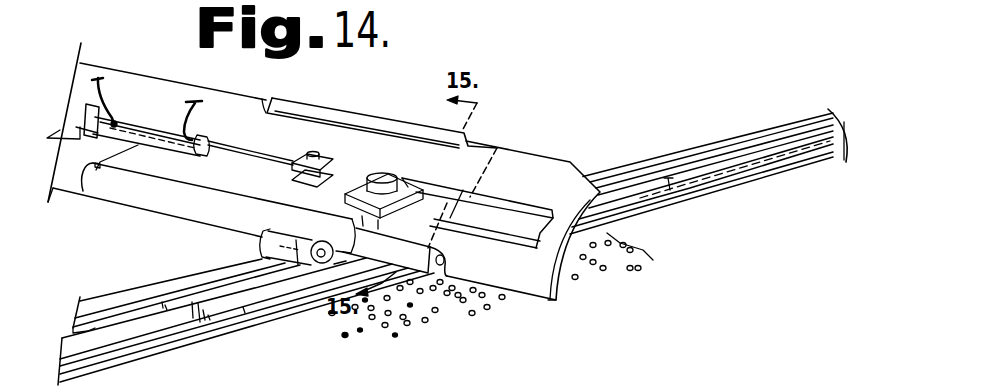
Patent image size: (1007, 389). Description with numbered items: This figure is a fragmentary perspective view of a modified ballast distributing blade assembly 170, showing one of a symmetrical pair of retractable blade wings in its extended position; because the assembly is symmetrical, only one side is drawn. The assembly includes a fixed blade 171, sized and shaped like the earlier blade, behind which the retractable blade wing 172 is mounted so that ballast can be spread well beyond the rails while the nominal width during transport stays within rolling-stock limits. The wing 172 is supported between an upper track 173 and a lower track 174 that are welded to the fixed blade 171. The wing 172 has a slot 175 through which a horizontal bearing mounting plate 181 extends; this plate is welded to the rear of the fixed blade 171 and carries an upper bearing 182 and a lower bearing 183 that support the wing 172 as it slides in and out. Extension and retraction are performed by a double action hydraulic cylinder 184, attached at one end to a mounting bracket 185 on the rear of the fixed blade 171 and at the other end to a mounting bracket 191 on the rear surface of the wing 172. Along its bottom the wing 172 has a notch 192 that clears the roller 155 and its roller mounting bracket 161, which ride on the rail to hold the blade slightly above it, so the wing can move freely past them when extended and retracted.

The ballast distributing blade assembly 170 is at (150, 66).
The mounting bracket 185 is at (80, 124).
The fixed blade 171 is at (157, 109).
The mounting bracket 191 is at (310, 153).
The upper track 173 is at (395, 127).
The horizontal bearing mounting plate 181 is at (345, 190).
The upper bearing 182 is at (450, 160).
The retractable blade wing 172 is at (550, 190).
The double action hydraulic cylinder 184 is at (84, 189).
The lower track 174 is at (157, 182).
The roller mounting bracket 161 is at (267, 231).
The roller 155 is at (262, 254).
The lower bearing 183 is at (386, 250).
The notch 192 is at (447, 257).
The slot 175 is at (563, 287).